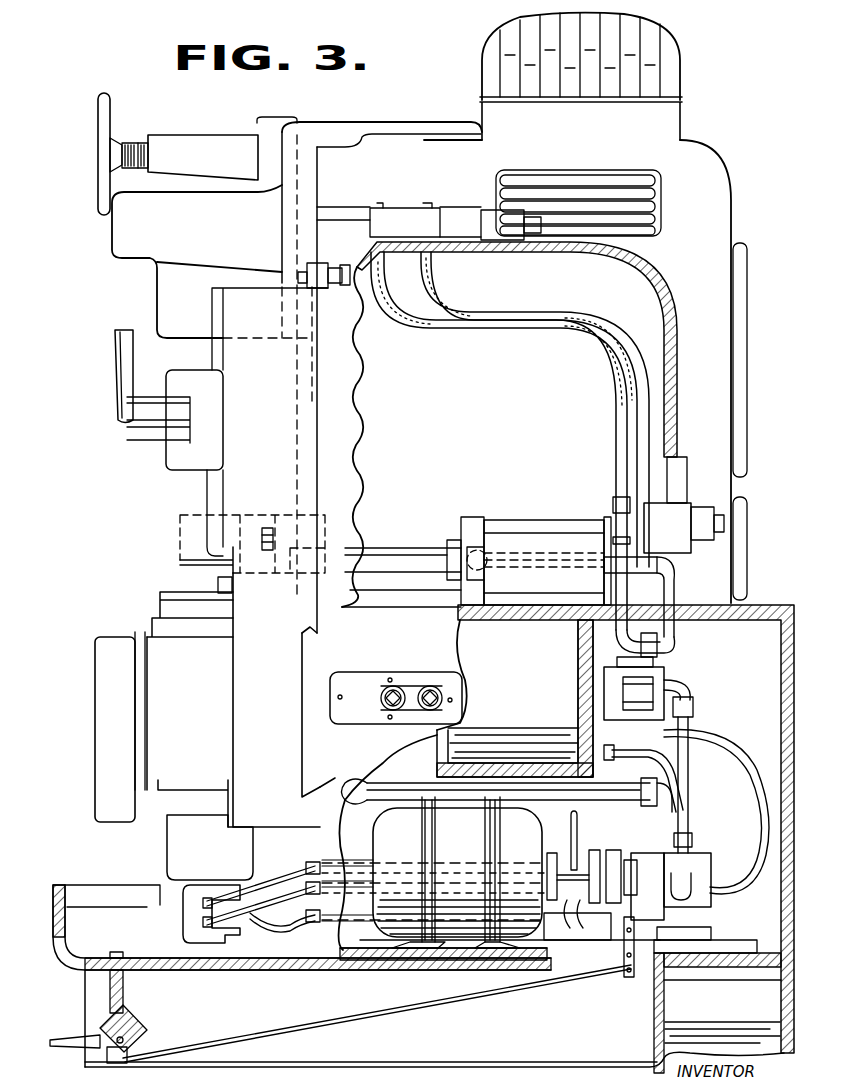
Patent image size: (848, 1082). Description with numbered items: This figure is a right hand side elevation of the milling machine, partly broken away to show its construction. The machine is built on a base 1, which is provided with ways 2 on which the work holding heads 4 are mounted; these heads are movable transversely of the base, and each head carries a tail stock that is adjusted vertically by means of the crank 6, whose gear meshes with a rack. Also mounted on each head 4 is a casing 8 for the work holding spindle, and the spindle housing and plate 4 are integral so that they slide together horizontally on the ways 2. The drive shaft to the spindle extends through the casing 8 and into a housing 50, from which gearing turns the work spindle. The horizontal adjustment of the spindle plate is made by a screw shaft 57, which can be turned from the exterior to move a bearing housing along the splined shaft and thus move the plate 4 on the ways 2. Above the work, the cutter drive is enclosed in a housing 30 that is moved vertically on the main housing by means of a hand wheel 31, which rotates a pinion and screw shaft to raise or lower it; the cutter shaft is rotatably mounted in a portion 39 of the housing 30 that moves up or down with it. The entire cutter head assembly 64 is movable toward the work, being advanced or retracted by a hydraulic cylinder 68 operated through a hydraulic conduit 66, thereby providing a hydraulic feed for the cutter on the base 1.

The base 1 is at (752, 615).
The ways 2 is at (312, 705).
The work holding head 4 is at (250, 670).
The crank 6 is at (113, 365).
The casing 8 is at (148, 637).
The housing 30 is at (165, 288).
The hand wheel 31 is at (98, 174).
The portion of the housing 39 is at (183, 540).
The housing 50 is at (100, 803).
The screw shaft 57 is at (392, 688).
The cutter head assembly 64 is at (700, 165).
The hydraulic conduit 66 is at (672, 603).
The hydraulic cylinder 68 is at (540, 525).